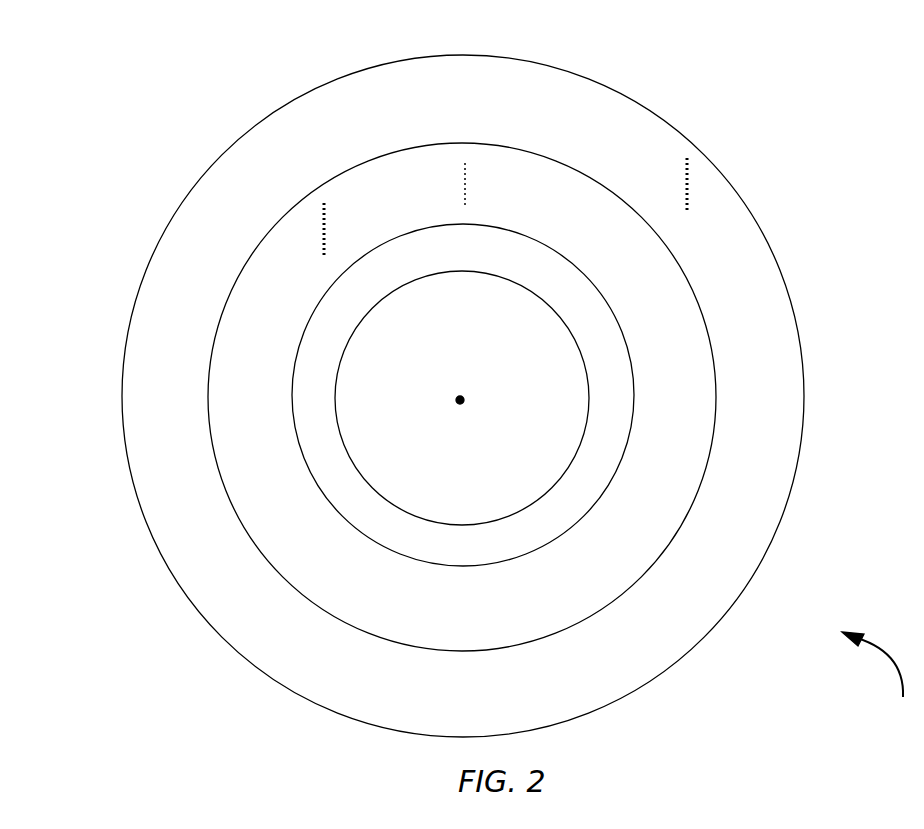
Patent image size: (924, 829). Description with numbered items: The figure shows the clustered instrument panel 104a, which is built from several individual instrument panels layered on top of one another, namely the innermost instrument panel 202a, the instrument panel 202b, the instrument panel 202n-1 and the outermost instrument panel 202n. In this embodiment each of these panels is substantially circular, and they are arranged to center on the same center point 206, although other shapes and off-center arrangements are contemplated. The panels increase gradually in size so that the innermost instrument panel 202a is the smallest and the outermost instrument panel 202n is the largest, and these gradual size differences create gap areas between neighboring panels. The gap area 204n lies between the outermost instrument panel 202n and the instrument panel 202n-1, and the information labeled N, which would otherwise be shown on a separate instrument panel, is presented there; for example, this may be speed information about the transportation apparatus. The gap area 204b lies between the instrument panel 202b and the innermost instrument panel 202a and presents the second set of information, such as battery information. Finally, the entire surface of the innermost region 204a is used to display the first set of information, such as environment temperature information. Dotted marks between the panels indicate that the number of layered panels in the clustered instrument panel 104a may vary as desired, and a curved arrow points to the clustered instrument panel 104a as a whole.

The outermost instrument panel 202n is at (462, 53).
The instrument panel 202n-1 is at (462, 143).
The instrument panel 202b is at (462, 223).
The innermost instrument panel 202a is at (462, 272).
The gap area 204n is at (342, 128).
The gap area 204b is at (355, 304).
The gap area 204a is at (478, 357).
The center point 206 is at (458, 400).
The clustered instrument panel 104a is at (883, 679).